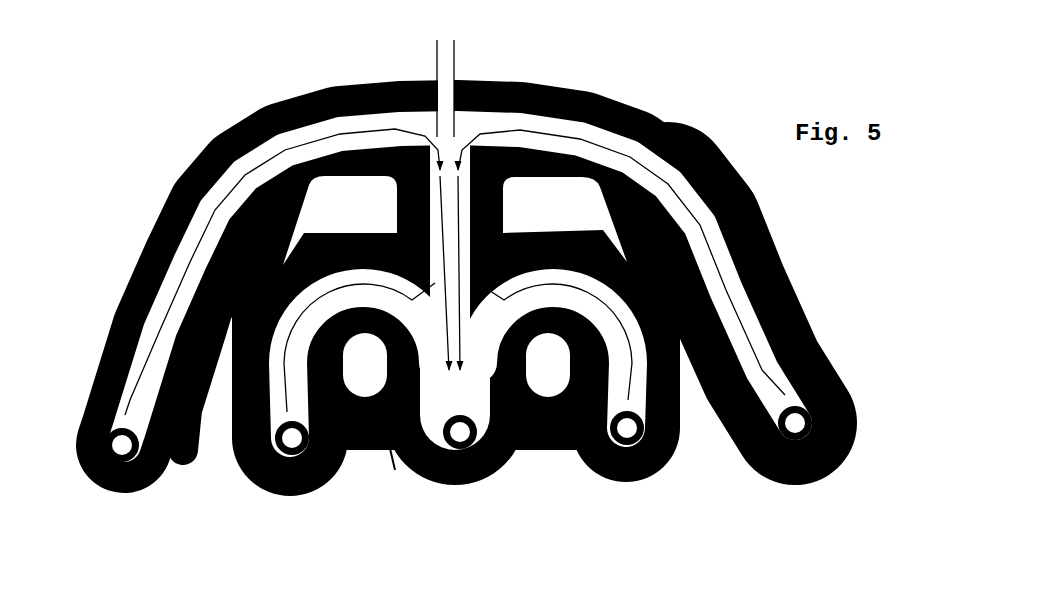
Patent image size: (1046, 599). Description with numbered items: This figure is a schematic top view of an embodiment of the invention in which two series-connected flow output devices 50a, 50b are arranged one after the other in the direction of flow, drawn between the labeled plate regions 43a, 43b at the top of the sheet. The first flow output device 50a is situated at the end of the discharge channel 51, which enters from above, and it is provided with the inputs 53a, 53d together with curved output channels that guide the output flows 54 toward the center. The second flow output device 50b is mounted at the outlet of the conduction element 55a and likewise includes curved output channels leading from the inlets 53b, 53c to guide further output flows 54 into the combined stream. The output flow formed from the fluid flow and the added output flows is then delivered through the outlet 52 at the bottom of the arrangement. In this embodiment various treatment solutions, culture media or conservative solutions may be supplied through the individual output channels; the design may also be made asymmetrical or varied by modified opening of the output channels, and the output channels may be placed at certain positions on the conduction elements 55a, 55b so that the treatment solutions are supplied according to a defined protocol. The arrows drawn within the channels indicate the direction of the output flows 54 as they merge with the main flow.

The first plate 43a is at (168, 13).
The second plate 43b is at (536, 6).
The first flow output device 50a is at (780, 194).
The second flow output device 50b is at (566, 476).
The discharge channel 51 is at (445, 70).
The outlet 52 is at (428, 428).
The input 53a is at (125, 487).
The inlet 53b is at (292, 480).
The inlet 53c is at (624, 471).
The input 53d is at (803, 467).
The output flows 54 is at (470, 152).
The conduction element 55a is at (442, 222).
The conduction element 55b is at (407, 462).